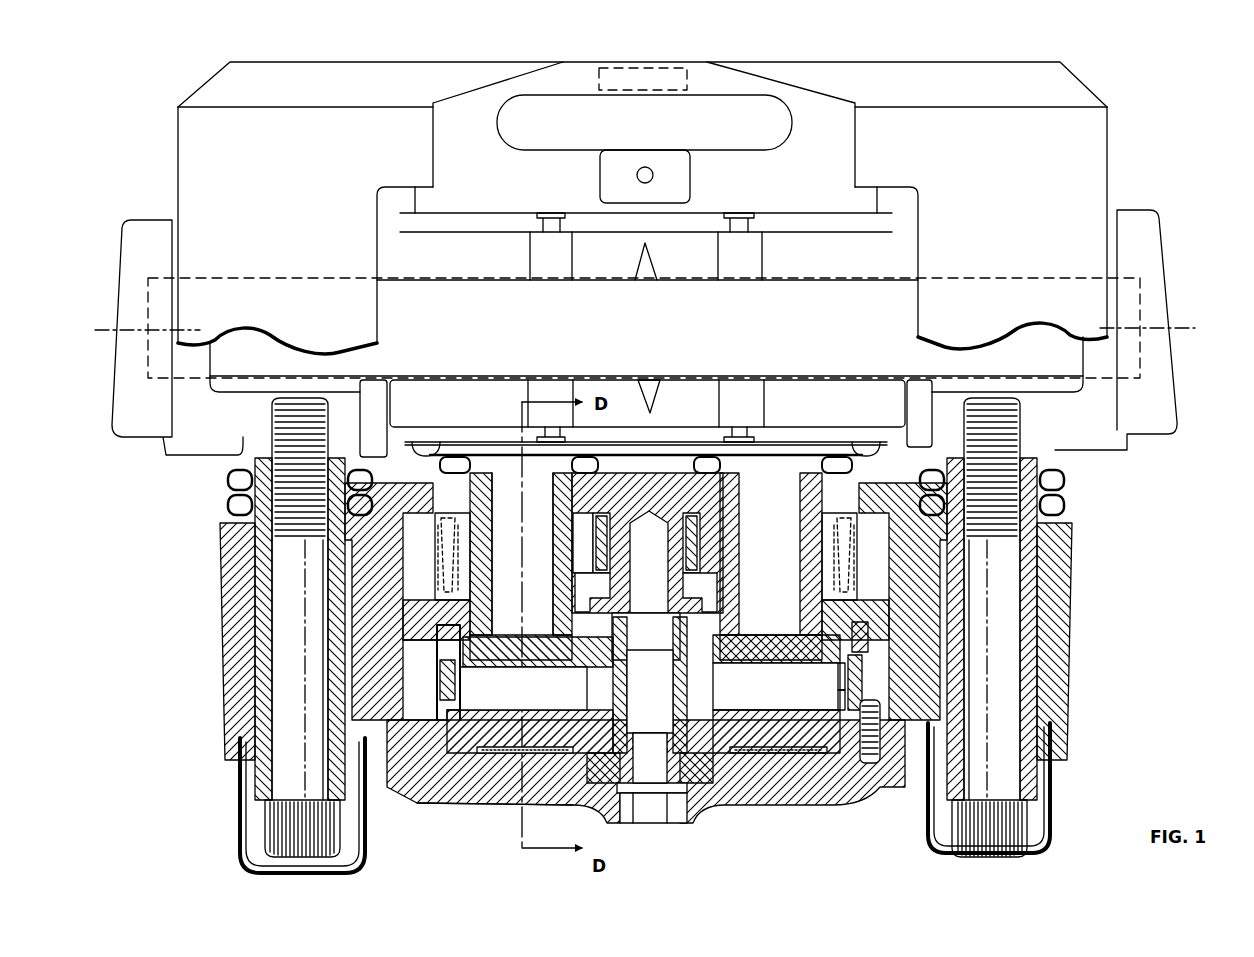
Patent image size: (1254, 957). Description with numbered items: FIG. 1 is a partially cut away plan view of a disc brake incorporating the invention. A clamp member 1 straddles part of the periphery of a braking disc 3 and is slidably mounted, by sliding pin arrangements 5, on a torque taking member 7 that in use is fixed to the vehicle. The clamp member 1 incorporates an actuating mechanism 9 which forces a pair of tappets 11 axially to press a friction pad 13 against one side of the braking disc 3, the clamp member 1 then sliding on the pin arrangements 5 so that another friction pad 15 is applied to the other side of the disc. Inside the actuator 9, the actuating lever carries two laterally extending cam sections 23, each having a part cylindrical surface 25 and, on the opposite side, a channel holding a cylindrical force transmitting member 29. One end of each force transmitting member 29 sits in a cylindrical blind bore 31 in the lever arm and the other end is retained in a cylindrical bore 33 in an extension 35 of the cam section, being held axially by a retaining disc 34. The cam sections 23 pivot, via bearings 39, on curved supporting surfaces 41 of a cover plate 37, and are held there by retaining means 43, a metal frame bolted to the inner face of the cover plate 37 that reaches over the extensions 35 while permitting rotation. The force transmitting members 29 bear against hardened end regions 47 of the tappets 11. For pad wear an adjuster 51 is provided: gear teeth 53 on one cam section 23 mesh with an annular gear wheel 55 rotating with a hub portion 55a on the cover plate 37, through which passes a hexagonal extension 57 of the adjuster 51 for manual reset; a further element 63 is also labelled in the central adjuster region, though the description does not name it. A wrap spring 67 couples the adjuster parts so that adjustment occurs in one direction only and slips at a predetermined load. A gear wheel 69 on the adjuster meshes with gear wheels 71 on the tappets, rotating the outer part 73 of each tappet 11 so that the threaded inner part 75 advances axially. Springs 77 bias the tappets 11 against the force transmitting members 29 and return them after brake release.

The clamp member 1 is at (165, 140).
The braking disc 3 is at (205, 295).
The sliding pin arrangements 5 is at (262, 682).
The torque taking member 7 is at (222, 548).
The actuating mechanism 9 is at (766, 818).
The tappets 11 is at (458, 597).
The friction pad 13 is at (590, 392).
The friction pad 15 is at (815, 262).
The cam sections 23 is at (430, 768).
The part cylindrical surface 25 is at (520, 797).
The force transmitting member 29 is at (447, 790).
The cylindrical blind bore 31 is at (725, 706).
The cylindrical bore 33 is at (838, 686).
The retaining disc 34 is at (838, 700).
The extension 35 is at (858, 642).
The cover plate 37 is at (477, 806).
The bearings 39 is at (790, 762).
The curved supporting surfaces 41 is at (748, 760).
The retaining means 43 is at (440, 670).
The end regions 47 is at (445, 662).
The adjuster 51 is at (668, 822).
The gear teeth 53 is at (578, 760).
The annular gear wheel 55 is at (700, 782).
The hub portion 55a is at (600, 800).
The extension 57 is at (640, 812).
The coupling 63 is at (648, 735).
The wrap spring 67 is at (718, 703).
The gear wheel 69 is at (558, 590).
The gear wheels 71 is at (543, 615).
The outer part 73 is at (550, 547).
The inner part 75 is at (522, 554).
The springs 77 is at (436, 532).